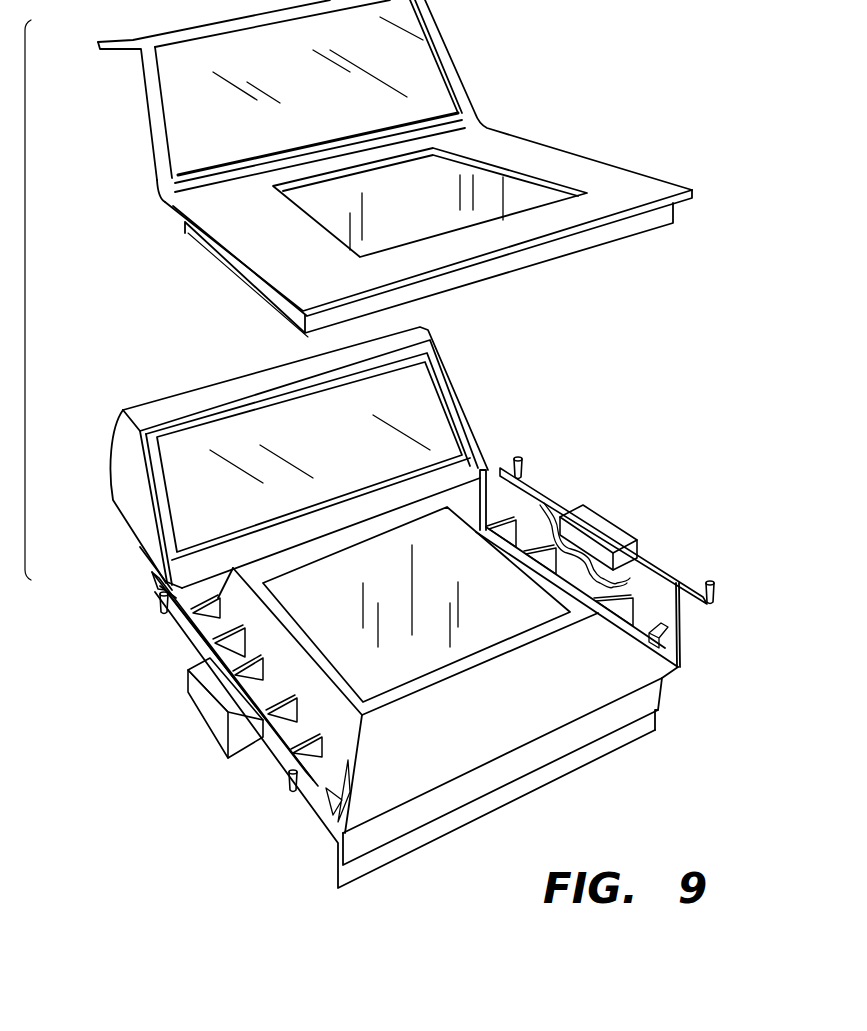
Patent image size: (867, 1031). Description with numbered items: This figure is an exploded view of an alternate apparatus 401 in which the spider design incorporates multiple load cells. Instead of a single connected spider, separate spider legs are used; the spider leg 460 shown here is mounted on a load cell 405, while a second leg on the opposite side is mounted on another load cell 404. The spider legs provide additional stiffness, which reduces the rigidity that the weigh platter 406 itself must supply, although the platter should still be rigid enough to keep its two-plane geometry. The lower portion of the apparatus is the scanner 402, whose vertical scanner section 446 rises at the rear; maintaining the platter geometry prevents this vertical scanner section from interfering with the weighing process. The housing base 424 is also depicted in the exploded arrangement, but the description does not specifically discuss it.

The apparatus 401 is at (423, 597).
The scanner 402 is at (195, 682).
The load cell 404 is at (212, 718).
The load cell 405 is at (618, 527).
The weigh platter 406 is at (562, 148).
The housing base 424 is at (390, 787).
The vertical scanner section 446 is at (133, 490).
The spider leg 460 is at (677, 571).